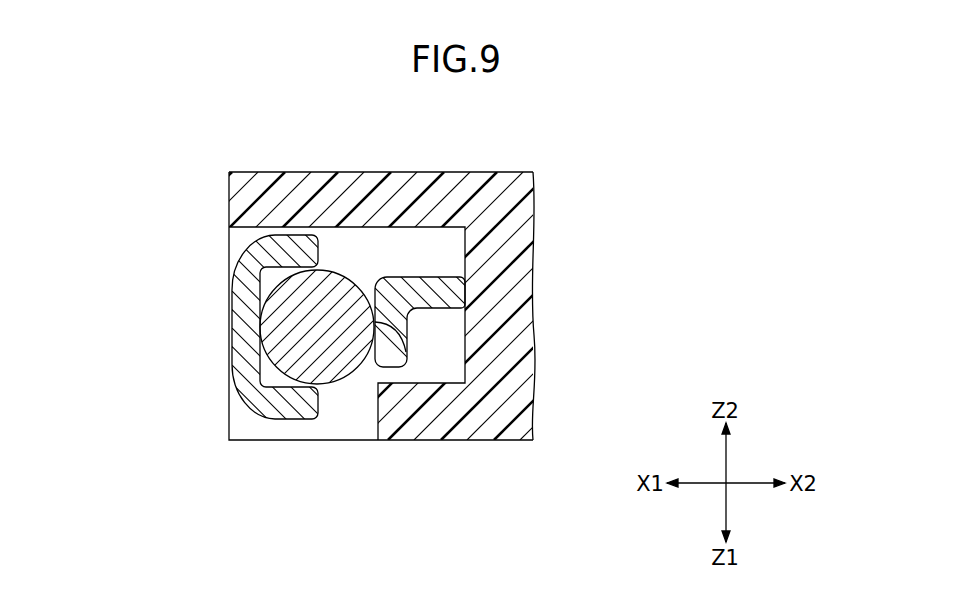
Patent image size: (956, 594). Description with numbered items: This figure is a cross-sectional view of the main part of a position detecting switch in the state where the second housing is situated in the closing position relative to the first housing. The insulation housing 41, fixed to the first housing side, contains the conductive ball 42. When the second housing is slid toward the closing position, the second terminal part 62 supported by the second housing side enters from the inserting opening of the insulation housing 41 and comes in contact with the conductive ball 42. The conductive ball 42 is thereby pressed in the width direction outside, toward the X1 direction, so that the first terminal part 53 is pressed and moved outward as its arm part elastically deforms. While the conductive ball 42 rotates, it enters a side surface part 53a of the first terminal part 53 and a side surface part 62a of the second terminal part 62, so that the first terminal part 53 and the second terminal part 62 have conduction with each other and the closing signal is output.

The insulation housing 41 is at (297, 190).
The conductive ball 42 is at (338, 292).
The first terminal part 53 is at (245, 287).
The side surface part 53a is at (258, 340).
The second terminal part 62 is at (442, 300).
The side surface part 62a is at (412, 313).